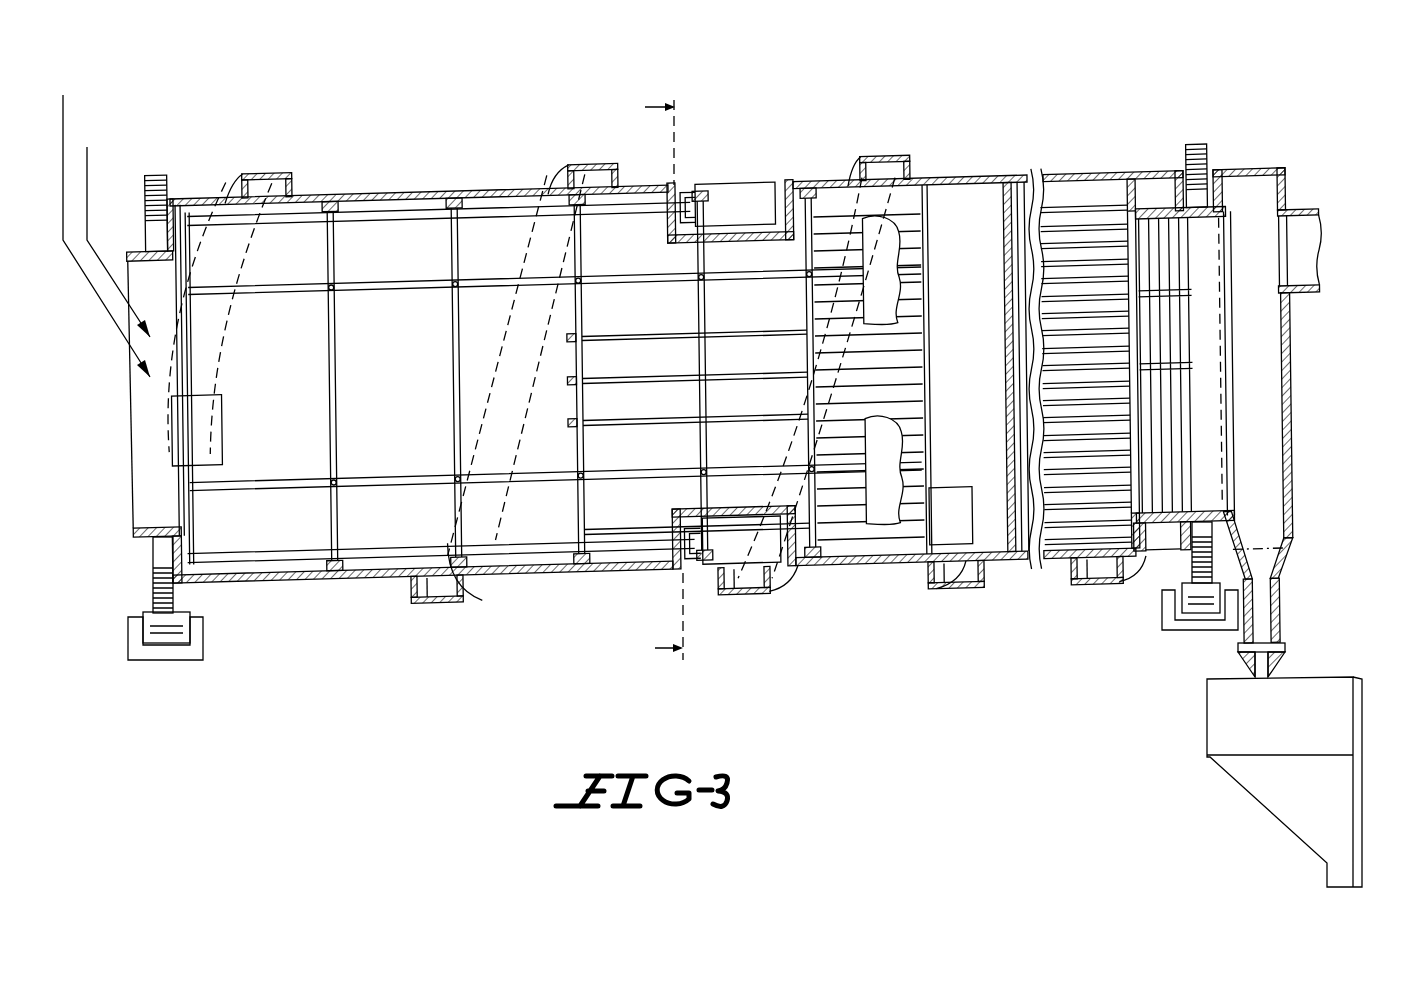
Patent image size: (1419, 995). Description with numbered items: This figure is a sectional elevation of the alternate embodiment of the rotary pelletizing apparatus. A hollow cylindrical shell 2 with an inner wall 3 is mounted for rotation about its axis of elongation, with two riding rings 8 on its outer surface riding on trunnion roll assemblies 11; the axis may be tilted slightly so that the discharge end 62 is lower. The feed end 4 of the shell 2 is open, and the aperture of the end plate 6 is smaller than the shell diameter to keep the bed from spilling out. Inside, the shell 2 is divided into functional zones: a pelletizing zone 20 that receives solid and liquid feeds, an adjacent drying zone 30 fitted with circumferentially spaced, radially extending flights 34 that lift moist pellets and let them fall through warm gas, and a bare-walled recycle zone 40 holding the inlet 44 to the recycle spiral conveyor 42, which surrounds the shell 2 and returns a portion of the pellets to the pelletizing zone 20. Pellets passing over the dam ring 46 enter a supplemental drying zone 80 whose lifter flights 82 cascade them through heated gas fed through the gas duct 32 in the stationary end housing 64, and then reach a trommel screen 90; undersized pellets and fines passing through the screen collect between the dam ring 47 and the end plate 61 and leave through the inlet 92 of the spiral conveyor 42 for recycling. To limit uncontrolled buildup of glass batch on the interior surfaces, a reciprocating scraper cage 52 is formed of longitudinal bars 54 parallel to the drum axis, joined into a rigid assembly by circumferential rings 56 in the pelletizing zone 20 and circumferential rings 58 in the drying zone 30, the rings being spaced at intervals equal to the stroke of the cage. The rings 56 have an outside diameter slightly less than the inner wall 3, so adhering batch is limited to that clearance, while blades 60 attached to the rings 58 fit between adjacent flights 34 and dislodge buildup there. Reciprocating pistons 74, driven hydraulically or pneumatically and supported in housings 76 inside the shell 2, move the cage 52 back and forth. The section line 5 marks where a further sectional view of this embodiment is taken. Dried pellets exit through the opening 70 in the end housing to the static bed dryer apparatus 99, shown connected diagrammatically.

The hollow cylindrical shell 2 is at (402, 205).
The inner wall 3 is at (360, 204).
The feed end 4 is at (134, 437).
The section line 5- 5 is at (652, 381).
The end plate 6 is at (176, 544).
The riding rings 8 is at (156, 176).
The trunnion roll assemblies 11 is at (182, 652).
The pelletizing zone 20 is at (404, 410).
The drying zone 30 is at (744, 336).
The gas duct 32 is at (1304, 242).
The radially extending flights 34 is at (734, 435).
The recycle zone 40 is at (975, 397).
The recycle spiral conveyor 42 is at (266, 178).
The inlet 44 is at (937, 612).
The dam ring 46 is at (1003, 584).
The dam ring 47 is at (1138, 580).
The reciprocating scraper cage 52 is at (490, 214).
The longitudinal bars 54 is at (618, 297).
The circumferential rings 56 is at (331, 350).
The circumferential rings 58 is at (805, 306).
The blades 60 is at (549, 206).
The end plate 61 is at (1183, 537).
The discharge end 62 is at (1233, 453).
The stationary end housing 64 is at (1287, 501).
The opening 70 is at (1263, 615).
The reciprocating pistons 74 is at (693, 212).
The housings 76 is at (741, 212).
The supplemental drying zone 80 is at (1087, 388).
The lifter flights 82 is at (1086, 232).
The trommel screen 90 is at (1159, 246).
The inlet 92 is at (1084, 566).
The static bed dryer apparatus 99 is at (1362, 762).